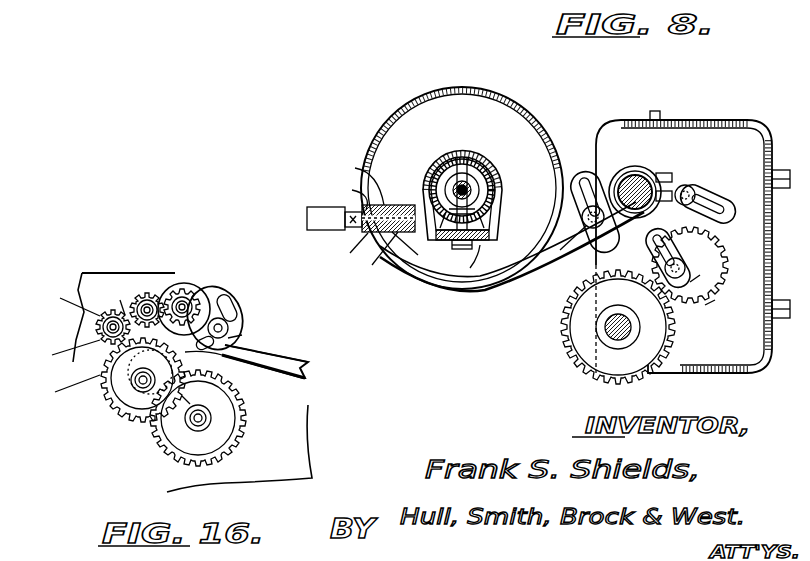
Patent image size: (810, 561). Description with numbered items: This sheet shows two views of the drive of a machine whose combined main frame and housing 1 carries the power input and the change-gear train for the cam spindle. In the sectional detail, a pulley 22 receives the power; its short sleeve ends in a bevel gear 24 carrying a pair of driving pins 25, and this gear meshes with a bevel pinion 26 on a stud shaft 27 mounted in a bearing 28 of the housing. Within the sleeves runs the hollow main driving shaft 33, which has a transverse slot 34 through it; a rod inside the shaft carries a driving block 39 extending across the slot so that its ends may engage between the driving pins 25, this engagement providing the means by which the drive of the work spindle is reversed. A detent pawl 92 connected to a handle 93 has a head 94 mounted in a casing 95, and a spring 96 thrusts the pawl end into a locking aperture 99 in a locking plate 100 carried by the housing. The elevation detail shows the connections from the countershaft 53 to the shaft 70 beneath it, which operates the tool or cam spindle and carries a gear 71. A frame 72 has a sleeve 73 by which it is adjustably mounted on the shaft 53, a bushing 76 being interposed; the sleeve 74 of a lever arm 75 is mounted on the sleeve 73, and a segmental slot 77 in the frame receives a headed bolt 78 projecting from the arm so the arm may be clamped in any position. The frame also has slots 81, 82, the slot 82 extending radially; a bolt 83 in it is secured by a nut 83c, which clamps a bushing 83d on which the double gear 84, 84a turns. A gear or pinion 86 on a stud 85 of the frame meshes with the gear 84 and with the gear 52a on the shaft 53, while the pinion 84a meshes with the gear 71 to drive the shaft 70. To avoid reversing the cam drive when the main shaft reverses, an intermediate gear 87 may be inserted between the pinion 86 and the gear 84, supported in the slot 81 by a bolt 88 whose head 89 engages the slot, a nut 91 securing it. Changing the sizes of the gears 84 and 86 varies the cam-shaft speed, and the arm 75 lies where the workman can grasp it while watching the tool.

In FIG. 16, the combined main frame and housing 1 is at (310, 459).
In FIG. 8, the pulley 22 is at (497, 82).
In FIG. 8, the bevel gear 24 is at (492, 193).
In FIG. 8, the driving pins 25 is at (440, 173).
In FIG. 8, the bevel pinion 26 is at (482, 216).
In FIG. 8, the stud shaft 27 is at (472, 231).
In FIG. 8, the bearing 28 is at (461, 262).
In FIG. 8, the hollow main driving shaft 33 is at (445, 190).
In FIG. 8, the transverse slot 34 is at (480, 182).
In FIG. 8, the driving block 39 is at (470, 160).
In FIG. 16, the gear 52a is at (188, 283).
In FIG. 8, the shaft 53 is at (646, 184).
In FIG. 16, the shaft 53 is at (202, 300).
In FIG. 8, the shaft 70 is at (606, 327).
In FIG. 16, the shaft 70 is at (206, 417).
In FIG. 8, the gear 71 is at (573, 371).
In FIG. 16, the gear 71 is at (240, 446).
In FIG. 8, the frame 72 is at (600, 172).
In FIG. 16, the frame 72 is at (240, 303).
In FIG. 8, the sleeve 73 is at (690, 261).
In FIG. 8, the sleeve 74 is at (628, 166).
In FIG. 8, the lever arm 75 is at (512, 246).
In FIG. 16, the lever arm 75 is at (262, 361).
In FIG. 8, the bushing 76 is at (668, 120).
In FIG. 8, the segmental slot 77 is at (586, 204).
In FIG. 16, the segmental slot 77 is at (229, 327).
In FIG. 8, the headed bolt 78 is at (590, 242).
In FIG. 16, the headed bolt 78 is at (244, 336).
In FIG. 8, the slot 81 is at (720, 206).
In FIG. 16, the slot 81 is at (120, 300).
In FIG. 8, the slot 82 is at (668, 257).
In FIG. 8, the bolt 83 is at (718, 257).
In FIG. 16, the bolt 83 is at (150, 396).
In FIG. 16, the nut 83c is at (200, 395).
In FIG. 16, the bushing 83d is at (142, 392).
In FIG. 8, the gear 84 is at (716, 300).
In FIG. 16, the gear 84 is at (127, 395).
In FIG. 8, the pinion 84a is at (700, 276).
In FIG. 16, the pinion 84a is at (112, 408).
In FIG. 8, the stud 85 is at (672, 186).
In FIG. 8, the gear or pinion 86 is at (692, 190).
In FIG. 16, the gear or pinion 86 is at (150, 296).
In FIG. 16, the intermediate gear 87 is at (65, 350).
In FIG. 16, the bolt 88 is at (101, 327).
In FIG. 16, the head 89 is at (69, 300).
In FIG. 16, the nut 91 is at (69, 390).
In FIG. 8, the detent pawl 92 is at (396, 213).
In FIG. 8, the handle 93 is at (312, 224).
In FIG. 8, the head 94 is at (361, 178).
In FIG. 8, the casing 95 is at (348, 192).
In FIG. 8, the spring 96 is at (349, 247).
In FIG. 8, the locking aperture 99 is at (409, 249).
In FIG. 8, the locking plate 100 is at (372, 254).